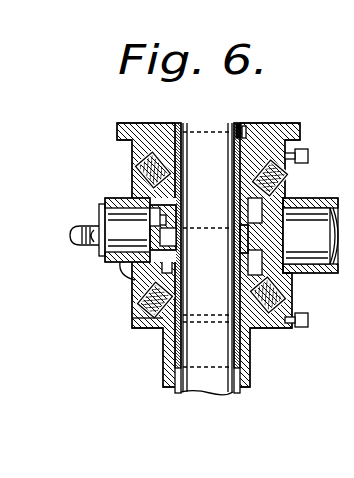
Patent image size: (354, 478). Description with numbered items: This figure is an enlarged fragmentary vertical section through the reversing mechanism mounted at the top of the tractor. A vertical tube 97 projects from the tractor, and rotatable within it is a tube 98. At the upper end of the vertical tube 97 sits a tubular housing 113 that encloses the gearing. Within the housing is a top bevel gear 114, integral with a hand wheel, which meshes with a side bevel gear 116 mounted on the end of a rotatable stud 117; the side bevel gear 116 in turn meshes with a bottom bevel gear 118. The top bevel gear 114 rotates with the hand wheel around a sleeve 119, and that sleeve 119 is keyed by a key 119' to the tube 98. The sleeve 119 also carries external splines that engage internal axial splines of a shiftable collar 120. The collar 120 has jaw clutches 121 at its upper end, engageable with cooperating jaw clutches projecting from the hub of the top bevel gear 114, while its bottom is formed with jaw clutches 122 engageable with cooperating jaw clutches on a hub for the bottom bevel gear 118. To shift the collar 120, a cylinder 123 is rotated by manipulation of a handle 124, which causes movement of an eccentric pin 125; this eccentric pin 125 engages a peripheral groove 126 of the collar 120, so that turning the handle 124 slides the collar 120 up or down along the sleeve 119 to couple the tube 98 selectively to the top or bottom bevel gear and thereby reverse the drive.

The vertical tube 97 is at (250, 387).
The tube 98 is at (238, 396).
The tubular housing 113 is at (143, 297).
The top bevel gear 114 is at (145, 170).
The side bevel gear 116 is at (280, 185).
The rotatable stud 117 is at (310, 235).
The bottom bevel gear 118 is at (138, 306).
The sleeve 119 is at (275, 214).
The key 119' is at (217, 119).
The shiftable collar 120 is at (252, 243).
The jaw clutches 121 is at (150, 202).
The jaw clutches 122 is at (135, 279).
The cylinder 123 is at (137, 230).
The handle 124 is at (70, 233).
The eccentric pin 125 is at (160, 227).
The peripheral groove 126 is at (262, 215).